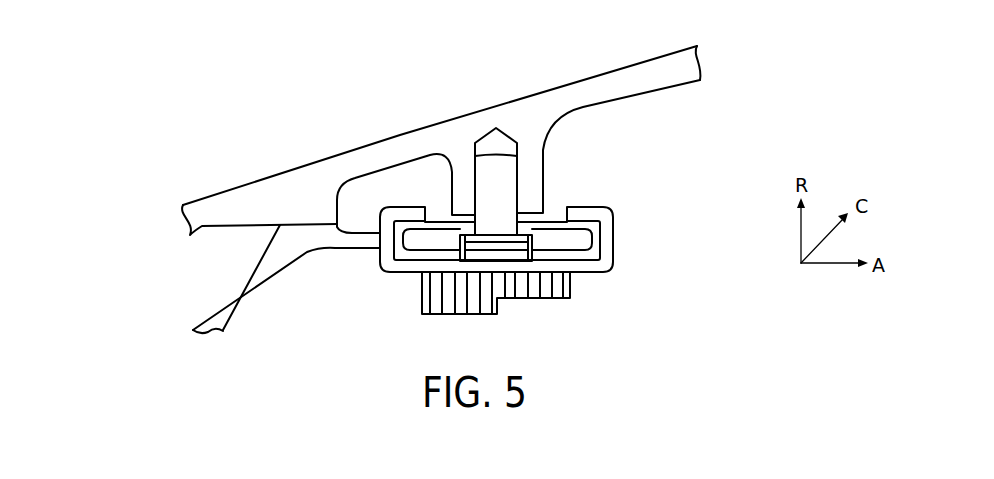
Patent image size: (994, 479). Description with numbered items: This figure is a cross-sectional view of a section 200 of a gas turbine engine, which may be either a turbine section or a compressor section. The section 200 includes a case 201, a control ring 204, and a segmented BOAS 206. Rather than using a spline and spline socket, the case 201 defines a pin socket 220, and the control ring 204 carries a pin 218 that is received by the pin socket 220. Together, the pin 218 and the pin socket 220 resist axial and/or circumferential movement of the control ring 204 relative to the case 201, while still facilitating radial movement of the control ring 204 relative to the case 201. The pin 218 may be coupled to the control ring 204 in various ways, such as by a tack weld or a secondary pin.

The section 200 is at (84, 161).
The case 201 is at (315, 170).
The control ring 204 is at (583, 238).
The segmented BOAS 206 is at (603, 263).
The pin 218 is at (507, 203).
The pin socket 220 is at (510, 145).